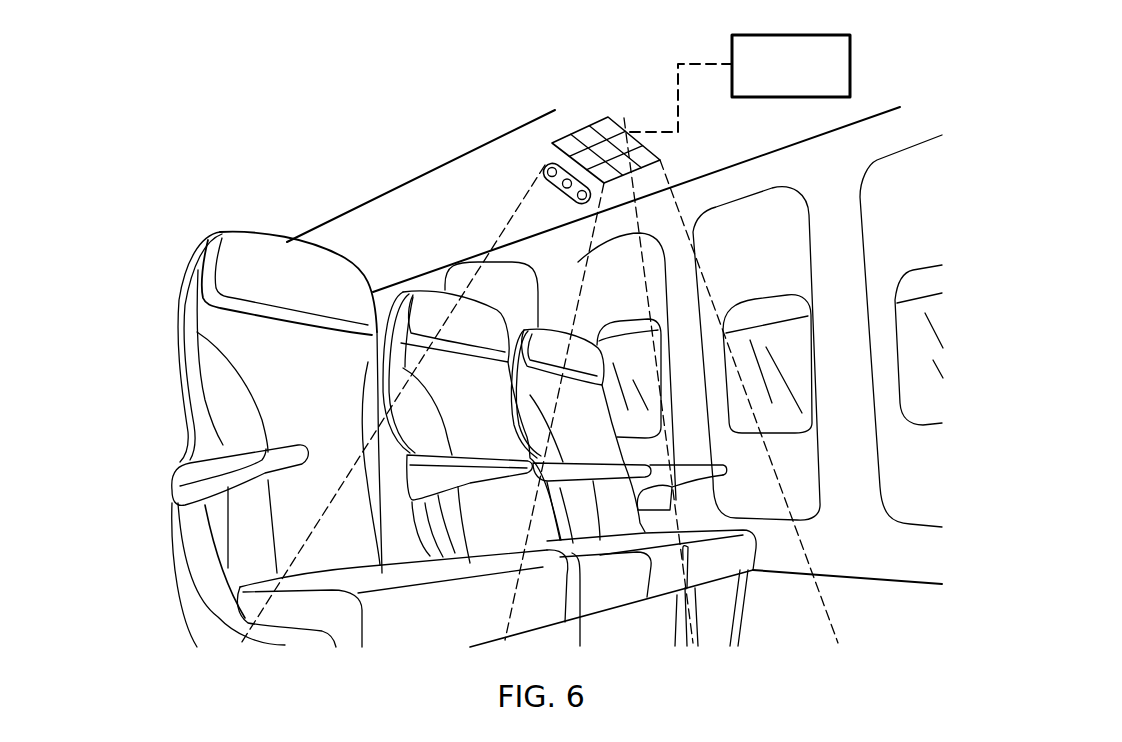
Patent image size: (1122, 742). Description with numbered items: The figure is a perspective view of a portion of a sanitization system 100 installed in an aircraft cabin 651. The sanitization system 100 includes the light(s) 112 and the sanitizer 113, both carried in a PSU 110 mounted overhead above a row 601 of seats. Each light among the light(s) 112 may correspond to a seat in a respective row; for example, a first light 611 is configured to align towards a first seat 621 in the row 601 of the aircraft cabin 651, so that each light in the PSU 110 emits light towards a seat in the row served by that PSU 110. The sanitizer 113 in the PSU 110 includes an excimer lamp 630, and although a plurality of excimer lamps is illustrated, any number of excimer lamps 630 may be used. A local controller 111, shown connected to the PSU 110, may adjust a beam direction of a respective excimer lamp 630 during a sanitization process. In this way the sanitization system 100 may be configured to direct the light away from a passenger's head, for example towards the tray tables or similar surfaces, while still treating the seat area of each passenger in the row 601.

The sanitization system 100 is at (268, 138).
The PSU 110 is at (525, 108).
The local controller 111 is at (776, 89).
The light(s) 112 is at (540, 158).
The sanitizer 113 is at (568, 108).
The row 601 is at (133, 437).
The first light 611 is at (541, 165).
The first seat 621 is at (275, 386).
The excimer lamp 630 is at (592, 126).
The aircraft cabin 651 is at (187, 183).